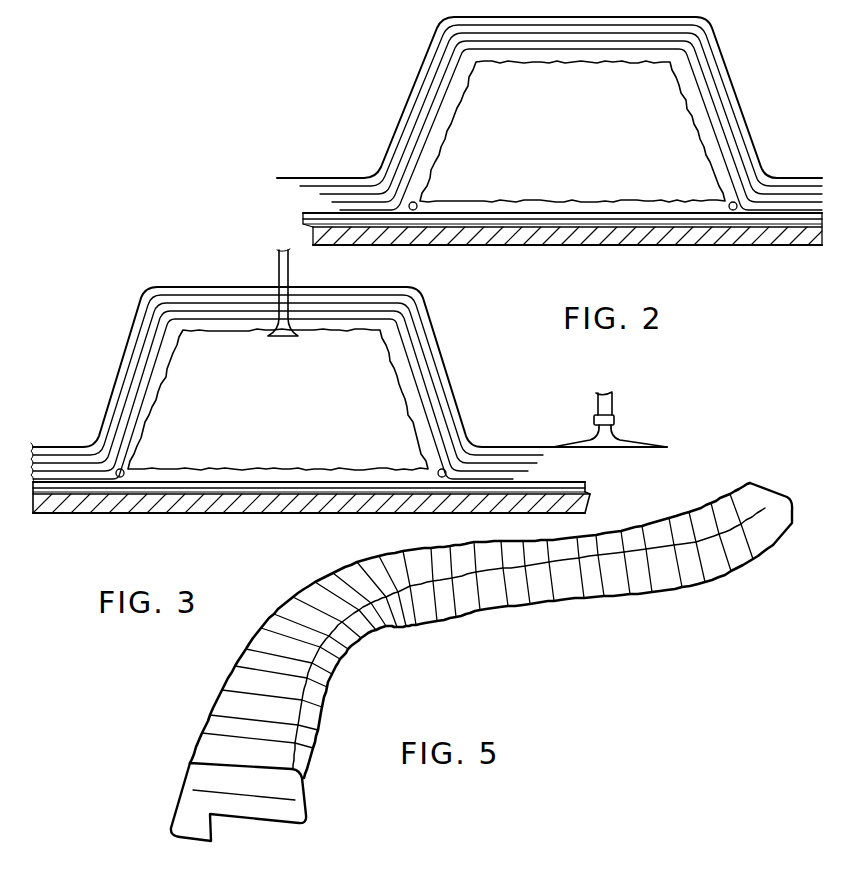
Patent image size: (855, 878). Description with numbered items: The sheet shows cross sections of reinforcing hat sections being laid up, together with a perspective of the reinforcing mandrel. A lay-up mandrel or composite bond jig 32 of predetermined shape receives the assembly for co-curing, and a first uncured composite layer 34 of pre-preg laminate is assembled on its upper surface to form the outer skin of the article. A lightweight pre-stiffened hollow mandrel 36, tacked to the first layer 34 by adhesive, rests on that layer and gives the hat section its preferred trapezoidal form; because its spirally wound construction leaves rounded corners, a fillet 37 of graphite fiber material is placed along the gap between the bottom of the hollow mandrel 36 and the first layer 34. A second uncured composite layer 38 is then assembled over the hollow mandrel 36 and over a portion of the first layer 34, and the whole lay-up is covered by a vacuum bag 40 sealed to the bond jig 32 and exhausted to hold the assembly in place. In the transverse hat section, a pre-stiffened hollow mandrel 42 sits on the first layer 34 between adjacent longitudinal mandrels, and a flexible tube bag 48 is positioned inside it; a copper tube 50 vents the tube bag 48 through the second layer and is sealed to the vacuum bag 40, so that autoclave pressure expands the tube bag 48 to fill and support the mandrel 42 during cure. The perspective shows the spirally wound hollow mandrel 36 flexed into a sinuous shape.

In FIG. 2, the lay-up mandrel 32 is at (503, 237).
In FIG. 3, the lay-up mandrel 32 is at (133, 514).
In FIG. 2, the first uncured composite layer 34 is at (603, 224).
In FIG. 3, the first uncured composite layer 34 is at (213, 488).
In FIG. 2, the hollow mandrel 36 is at (532, 58).
In FIG. 5, the hollow mandrel 36 is at (605, 600).
In FIG. 2, the fillet 37 is at (733, 212).
In FIG. 2, the second uncured composite layer 38 is at (335, 195).
In FIG. 2, the vacuum bag 40 is at (733, 78).
In FIG. 3, the vacuum bag 40 is at (450, 380).
In FIG. 3, the hollow mandrel 42 is at (405, 377).
In FIG. 2, the tube bag 48 is at (628, 68).
In FIG. 3, the tube bag 48 is at (167, 383).
In FIG. 3, the copper tube 50 is at (276, 270).